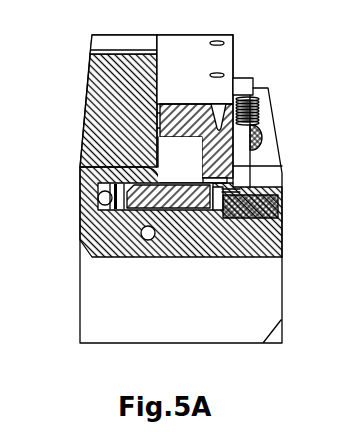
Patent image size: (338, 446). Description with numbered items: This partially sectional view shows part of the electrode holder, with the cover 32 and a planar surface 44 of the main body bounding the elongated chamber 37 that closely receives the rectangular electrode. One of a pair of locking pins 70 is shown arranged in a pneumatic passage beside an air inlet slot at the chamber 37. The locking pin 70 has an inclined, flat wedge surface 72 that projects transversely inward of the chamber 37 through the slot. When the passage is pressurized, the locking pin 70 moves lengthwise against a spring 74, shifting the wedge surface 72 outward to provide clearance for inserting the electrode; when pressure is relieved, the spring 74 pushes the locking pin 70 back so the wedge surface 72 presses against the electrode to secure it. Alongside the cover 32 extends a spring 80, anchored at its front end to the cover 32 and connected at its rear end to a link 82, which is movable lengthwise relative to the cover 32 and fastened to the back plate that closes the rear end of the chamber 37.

The link 82 is at (250, 86).
The spring 80 is at (259, 123).
The cover 32 is at (282, 166).
The wedge surface 72 is at (98, 164).
The chamber 37 is at (191, 168).
The planar surface 44 is at (90, 240).
The locking pin 70 is at (197, 210).
The spring 74 is at (220, 200).